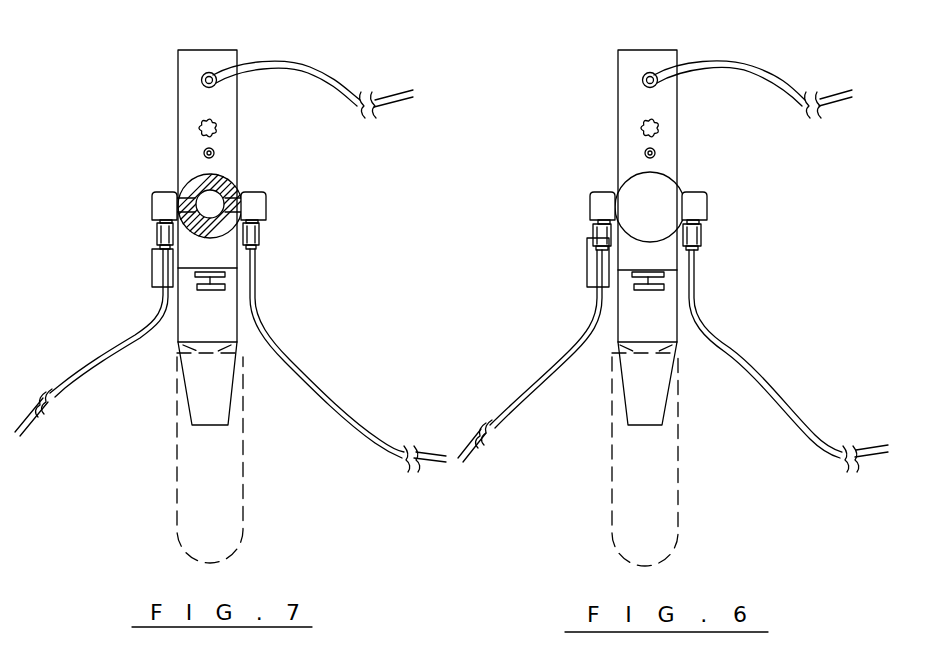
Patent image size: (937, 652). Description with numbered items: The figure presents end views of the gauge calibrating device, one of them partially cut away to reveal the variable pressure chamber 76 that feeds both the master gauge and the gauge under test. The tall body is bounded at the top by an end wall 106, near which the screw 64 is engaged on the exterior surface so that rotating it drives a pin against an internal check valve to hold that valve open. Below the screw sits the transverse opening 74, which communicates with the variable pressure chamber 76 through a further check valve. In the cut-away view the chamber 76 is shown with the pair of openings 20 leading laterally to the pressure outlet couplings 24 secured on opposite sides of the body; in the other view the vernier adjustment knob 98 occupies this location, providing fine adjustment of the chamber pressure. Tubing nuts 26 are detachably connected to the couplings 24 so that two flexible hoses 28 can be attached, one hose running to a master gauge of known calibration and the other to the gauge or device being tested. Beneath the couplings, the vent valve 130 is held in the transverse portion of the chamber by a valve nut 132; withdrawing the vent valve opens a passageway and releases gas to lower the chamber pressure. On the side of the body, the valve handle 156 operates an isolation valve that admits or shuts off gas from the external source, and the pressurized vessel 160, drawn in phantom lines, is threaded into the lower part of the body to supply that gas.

In FIG. 7, the end wall 106 is at (212, 60).
In FIG. 6, the end wall 106 is at (653, 62).
In FIG. 7, the screw 64 is at (220, 128).
In FIG. 6, the screw 64 is at (660, 127).
In FIG. 7, the transverse opening 74 is at (218, 152).
In FIG. 6, the transverse opening 74 is at (660, 152).
In FIG. 7, the variable pressure chamber 76 is at (228, 183).
In FIG. 6, the vernier adjustment knob 98 is at (650, 196).
In FIG. 7, the openings 20 is at (150, 203).
In FIG. 7, the pressure outlet couplings 24 is at (160, 190).
In FIG. 6, the pressure outlet couplings 24 is at (598, 208).
In FIG. 7, the tubing nuts 26 is at (155, 235).
In FIG. 6, the tubing nuts 26 is at (600, 238).
In FIG. 7, the valve handle 156 is at (152, 264).
In FIG. 6, the valve handle 156 is at (588, 272).
In FIG. 7, the flexible hoses 28 is at (107, 343).
In FIG. 6, the flexible hoses 28 is at (560, 356).
In FIG. 7, the vent valve 130 is at (225, 275).
In FIG. 6, the vent valve 130 is at (665, 276).
In FIG. 7, the valve nut 132 is at (213, 291).
In FIG. 6, the valve nut 132 is at (660, 290).
In FIG. 7, the pressurized vessel 160 is at (245, 473).
In FIG. 6, the pressurized vessel 160 is at (660, 484).